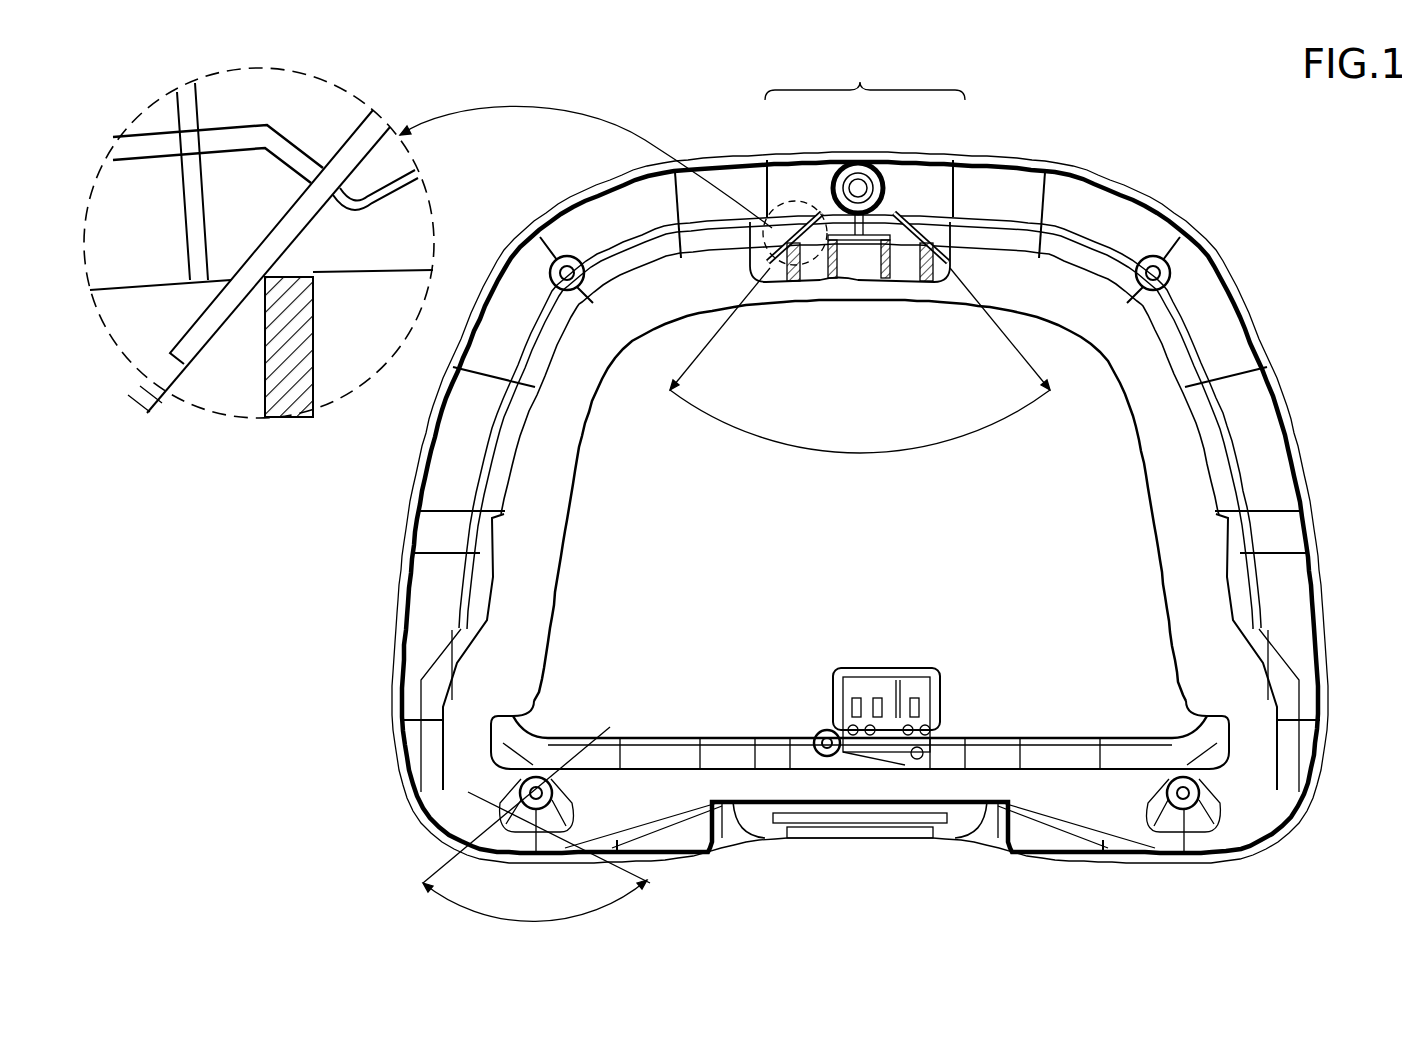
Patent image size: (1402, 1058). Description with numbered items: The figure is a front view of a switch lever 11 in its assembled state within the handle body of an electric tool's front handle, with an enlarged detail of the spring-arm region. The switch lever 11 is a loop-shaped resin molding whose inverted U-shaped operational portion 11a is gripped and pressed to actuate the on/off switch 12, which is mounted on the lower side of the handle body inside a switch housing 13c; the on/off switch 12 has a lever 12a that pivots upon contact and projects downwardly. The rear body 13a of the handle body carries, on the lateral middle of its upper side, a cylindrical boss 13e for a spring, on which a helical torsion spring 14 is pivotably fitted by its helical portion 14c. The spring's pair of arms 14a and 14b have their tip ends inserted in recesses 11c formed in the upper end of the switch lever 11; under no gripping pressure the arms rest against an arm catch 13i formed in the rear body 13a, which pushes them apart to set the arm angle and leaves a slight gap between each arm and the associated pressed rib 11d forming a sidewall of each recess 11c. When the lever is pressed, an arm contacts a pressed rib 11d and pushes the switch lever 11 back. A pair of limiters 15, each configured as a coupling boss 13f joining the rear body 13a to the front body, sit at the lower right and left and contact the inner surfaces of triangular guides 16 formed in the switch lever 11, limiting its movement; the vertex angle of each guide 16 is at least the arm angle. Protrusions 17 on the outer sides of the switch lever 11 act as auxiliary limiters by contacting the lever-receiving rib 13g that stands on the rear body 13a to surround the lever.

The switch lever 11 is at (1000, 283).
The operational portion 11a is at (560, 541).
The recess 11c is at (762, 222).
The pressed rib 11d is at (771, 284).
The on/off switch 12 is at (906, 688).
The lever 12a is at (867, 717).
The rear body 13a is at (1086, 163).
The switch housing 13c is at (897, 676).
The boss for a spring 13e is at (864, 232).
The coupling boss 13f is at (567, 256).
The lever-receiving rib 13g is at (1237, 433).
The arm catch 13i is at (836, 245).
The helical torsion spring 14 is at (559, 252).
The arm 14a is at (814, 214).
The arm 14b is at (912, 220).
The helical portion 14c is at (859, 160).
The limiter 15 is at (531, 805).
The guide 16 is at (1290, 862).
The protrusion 17 is at (497, 537).